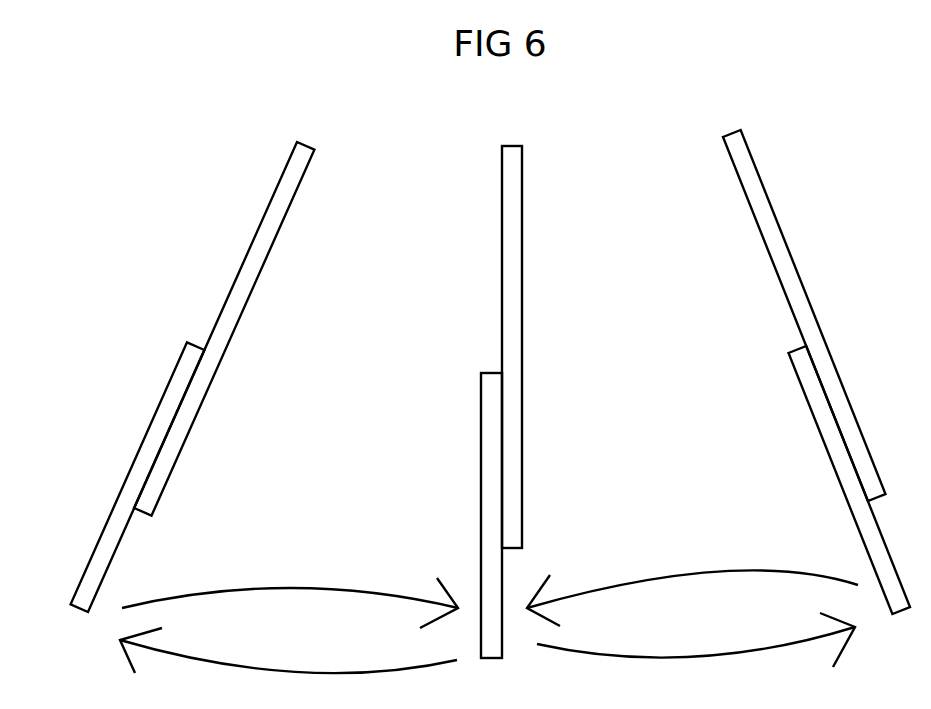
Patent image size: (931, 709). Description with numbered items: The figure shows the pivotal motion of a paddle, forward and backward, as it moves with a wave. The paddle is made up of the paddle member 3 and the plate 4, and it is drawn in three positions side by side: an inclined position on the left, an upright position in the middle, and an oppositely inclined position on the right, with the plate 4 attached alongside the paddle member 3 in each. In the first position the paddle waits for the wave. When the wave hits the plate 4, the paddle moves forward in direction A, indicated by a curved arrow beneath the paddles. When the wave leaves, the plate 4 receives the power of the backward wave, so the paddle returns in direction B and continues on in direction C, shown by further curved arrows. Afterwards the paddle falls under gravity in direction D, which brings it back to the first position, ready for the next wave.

The paddle 3 is at (262, 218).
The plate 4 is at (123, 483).
The direction A is at (288, 650).
The direction B is at (290, 591).
The direction C is at (696, 640).
The direction D is at (692, 586).